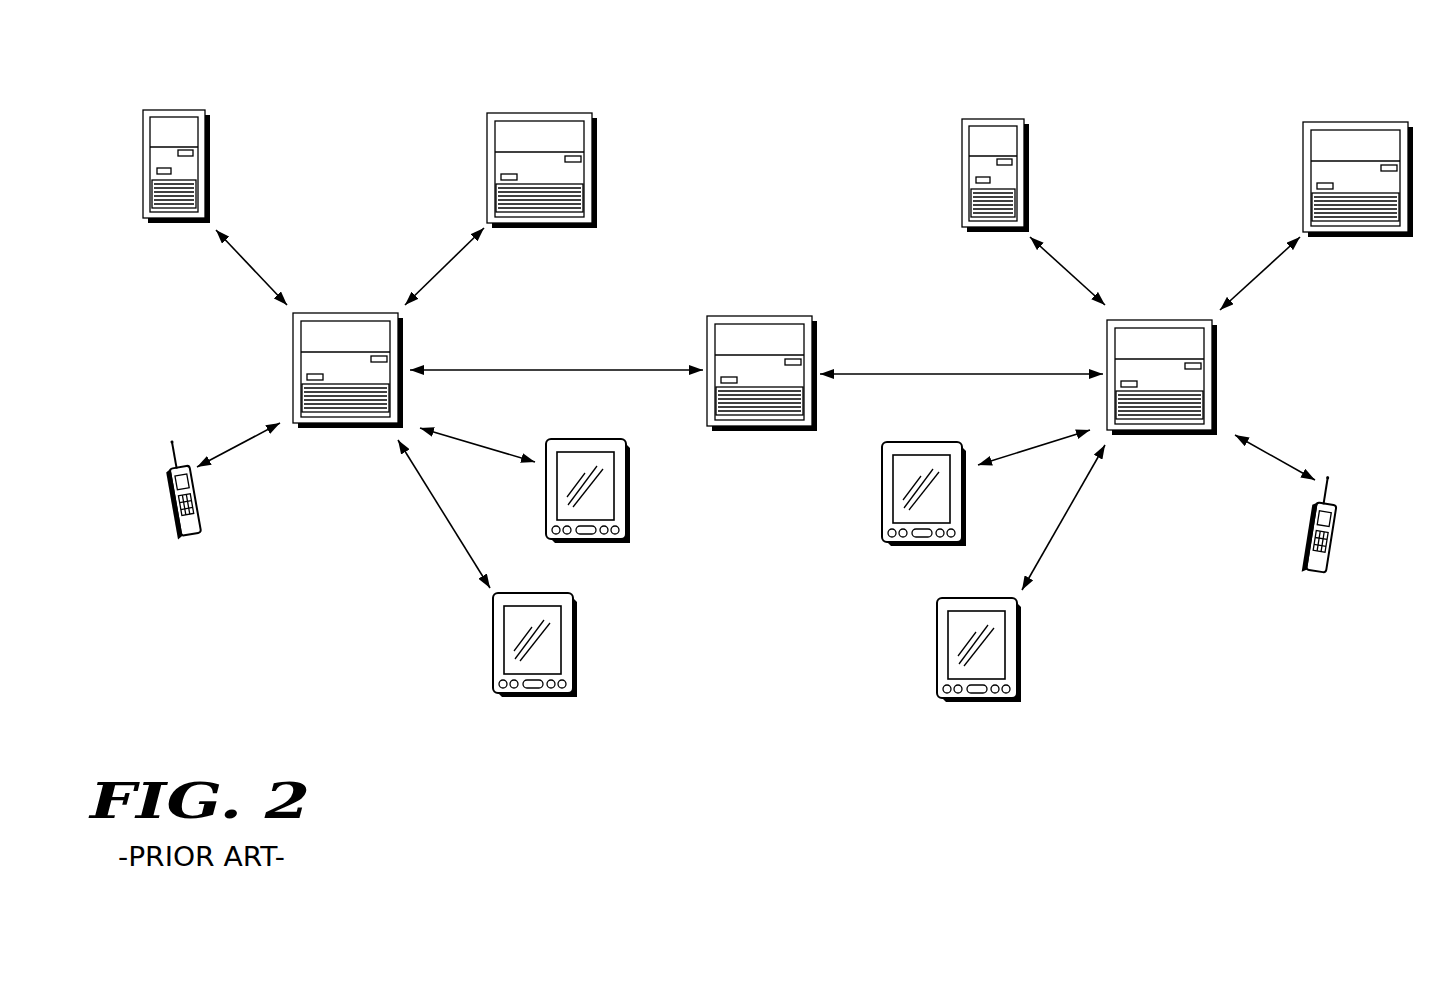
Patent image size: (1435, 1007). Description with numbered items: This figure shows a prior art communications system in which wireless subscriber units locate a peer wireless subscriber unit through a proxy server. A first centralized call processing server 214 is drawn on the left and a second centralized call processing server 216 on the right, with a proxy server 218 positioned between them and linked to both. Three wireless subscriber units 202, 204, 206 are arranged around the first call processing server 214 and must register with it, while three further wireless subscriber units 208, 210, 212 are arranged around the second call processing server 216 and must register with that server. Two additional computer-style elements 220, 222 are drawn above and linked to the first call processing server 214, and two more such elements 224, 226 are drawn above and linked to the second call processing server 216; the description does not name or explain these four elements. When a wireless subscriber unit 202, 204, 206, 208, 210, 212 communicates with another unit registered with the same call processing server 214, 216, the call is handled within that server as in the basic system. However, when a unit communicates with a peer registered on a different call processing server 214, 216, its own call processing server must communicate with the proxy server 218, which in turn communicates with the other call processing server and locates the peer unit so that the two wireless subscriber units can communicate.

The wireless subscriber unit 202 is at (166, 490).
The wireless subscriber unit 204 is at (577, 636).
The wireless subscriber unit 206 is at (628, 485).
The wireless subscriber unit 208 is at (880, 487).
The wireless subscriber unit 210 is at (935, 642).
The wireless subscriber unit 212 is at (1335, 523).
The first centralized call processing server 214 is at (343, 312).
The second centralized call processing server 216 is at (1158, 320).
The proxy server 218 is at (759, 315).
The computer 220 is at (178, 97).
The computer 222 is at (545, 100).
The computer 224 is at (995, 105).
The computer 226 is at (1354, 121).